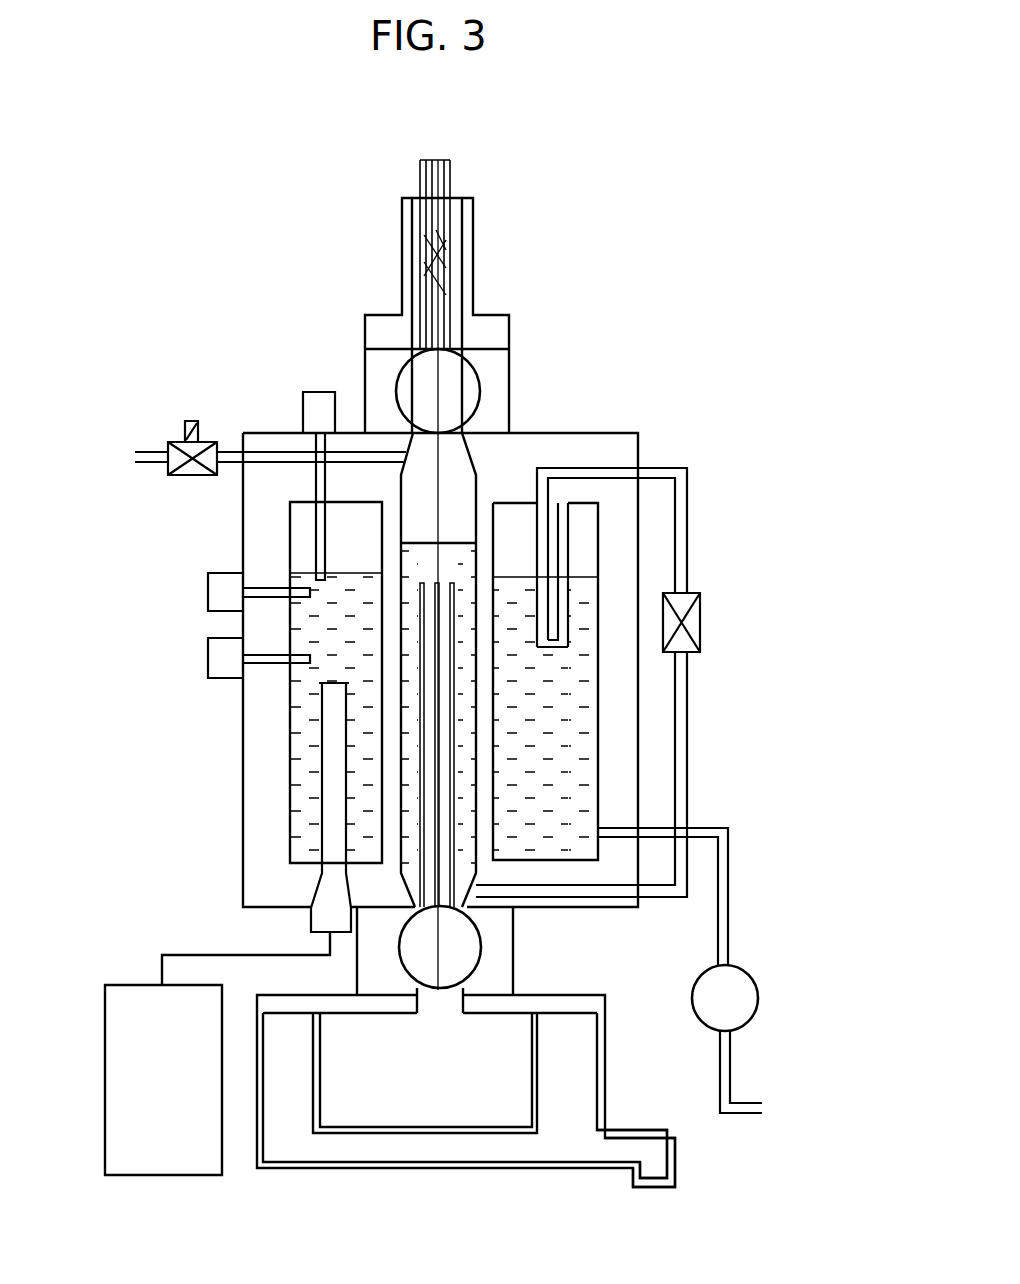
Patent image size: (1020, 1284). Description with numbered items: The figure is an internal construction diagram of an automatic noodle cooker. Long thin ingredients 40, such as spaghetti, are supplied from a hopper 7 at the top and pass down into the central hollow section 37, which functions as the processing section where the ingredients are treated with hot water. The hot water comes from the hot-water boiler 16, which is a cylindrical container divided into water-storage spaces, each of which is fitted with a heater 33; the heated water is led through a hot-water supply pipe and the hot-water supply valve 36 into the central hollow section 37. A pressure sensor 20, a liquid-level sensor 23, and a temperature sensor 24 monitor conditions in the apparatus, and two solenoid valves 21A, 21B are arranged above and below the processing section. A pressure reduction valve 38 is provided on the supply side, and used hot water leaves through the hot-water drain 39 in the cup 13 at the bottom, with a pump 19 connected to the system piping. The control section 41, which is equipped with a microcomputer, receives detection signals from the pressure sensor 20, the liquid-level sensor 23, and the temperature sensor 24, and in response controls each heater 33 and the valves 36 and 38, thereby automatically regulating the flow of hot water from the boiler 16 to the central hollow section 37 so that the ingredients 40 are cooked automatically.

The hopper 7 is at (466, 204).
The receiving cup 13 is at (430, 1114).
The hot-water boiler 16 is at (557, 435).
The pump 19 is at (750, 977).
The pressure sensor 20 is at (208, 587).
The solenoid valve 21A is at (482, 360).
The solenoid valve 21B is at (482, 948).
The liquid-level sensor 23 is at (320, 392).
The temperature sensor 24 is at (213, 660).
The heater 33 is at (322, 830).
The hot-water supply valve 36 is at (702, 617).
The central hollow section 37 is at (462, 497).
The pressure reduction valve 38 is at (185, 421).
The hot-water drain 39 is at (657, 1180).
The long thin ingredients 40 is at (427, 160).
The control section 41 is at (125, 985).